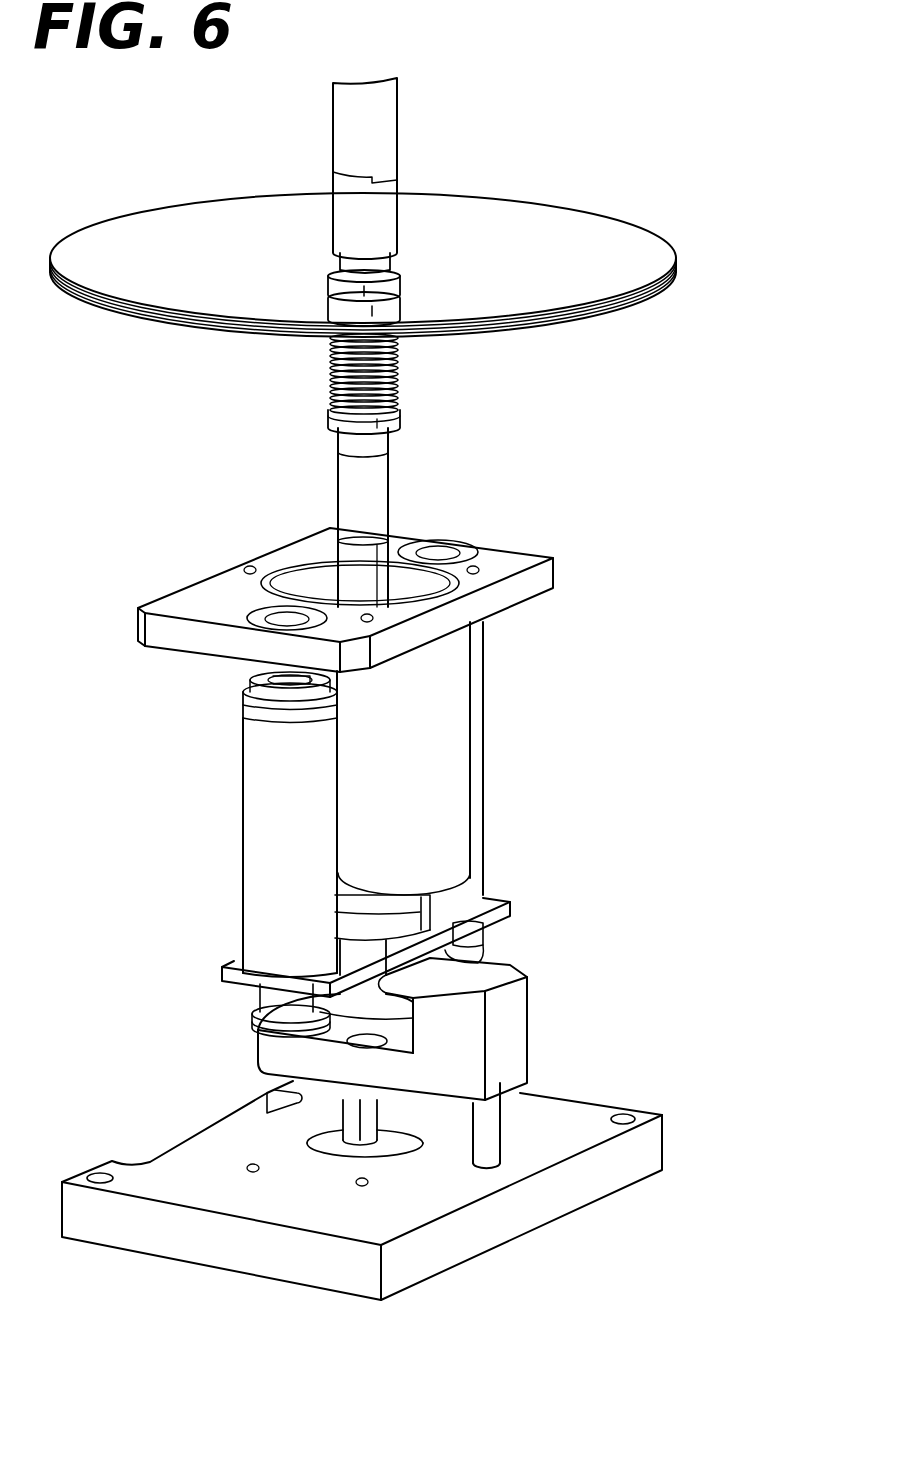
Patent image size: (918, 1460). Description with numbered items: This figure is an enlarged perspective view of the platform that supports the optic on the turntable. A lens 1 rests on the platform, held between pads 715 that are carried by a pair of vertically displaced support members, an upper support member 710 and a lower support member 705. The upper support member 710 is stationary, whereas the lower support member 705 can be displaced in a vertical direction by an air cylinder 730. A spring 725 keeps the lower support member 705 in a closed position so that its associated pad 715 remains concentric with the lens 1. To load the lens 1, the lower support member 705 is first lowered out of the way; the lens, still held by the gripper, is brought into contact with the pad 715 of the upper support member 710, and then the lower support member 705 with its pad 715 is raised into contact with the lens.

The lens 1 is at (608, 216).
The lower support member 705 is at (367, 497).
The upper support member 710 is at (383, 132).
The pads 715 is at (367, 293).
The spring 725 is at (265, 848).
The air cylinder 730 is at (360, 1132).